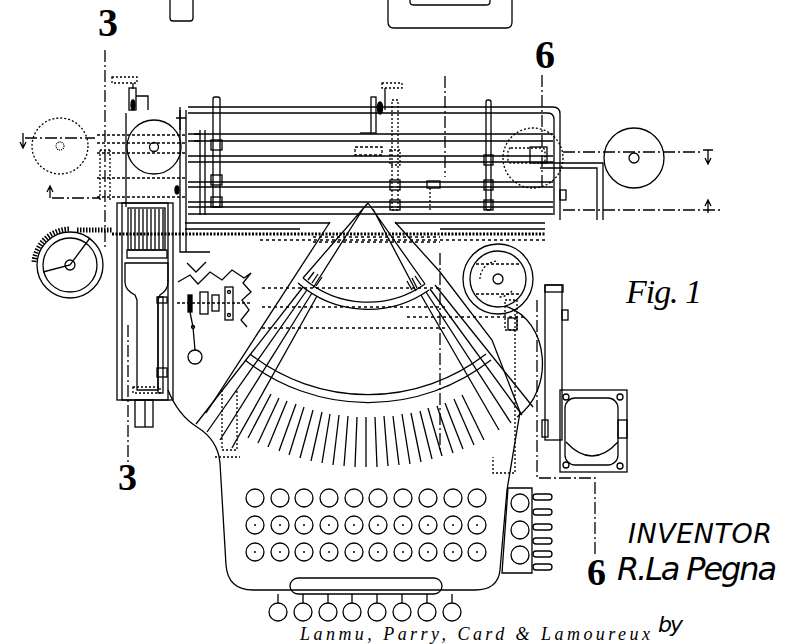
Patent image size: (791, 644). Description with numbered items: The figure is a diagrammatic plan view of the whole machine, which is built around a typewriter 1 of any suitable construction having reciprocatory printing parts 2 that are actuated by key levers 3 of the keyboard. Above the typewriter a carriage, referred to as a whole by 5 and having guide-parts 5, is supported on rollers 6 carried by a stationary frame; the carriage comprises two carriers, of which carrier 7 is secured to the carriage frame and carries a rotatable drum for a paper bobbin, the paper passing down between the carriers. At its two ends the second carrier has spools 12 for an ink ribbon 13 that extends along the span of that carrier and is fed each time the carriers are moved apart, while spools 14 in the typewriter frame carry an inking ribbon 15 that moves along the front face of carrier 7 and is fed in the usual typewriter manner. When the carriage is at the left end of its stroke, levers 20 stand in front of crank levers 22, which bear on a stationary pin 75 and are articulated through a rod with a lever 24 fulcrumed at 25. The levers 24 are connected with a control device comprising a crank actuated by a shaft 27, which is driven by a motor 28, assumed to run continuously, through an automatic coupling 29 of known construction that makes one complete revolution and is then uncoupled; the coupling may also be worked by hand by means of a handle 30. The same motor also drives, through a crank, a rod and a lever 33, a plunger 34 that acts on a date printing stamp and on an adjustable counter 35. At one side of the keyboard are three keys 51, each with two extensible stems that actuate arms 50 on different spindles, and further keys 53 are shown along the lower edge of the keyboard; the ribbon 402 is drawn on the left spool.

The typewriter 1 is at (233, 478).
The reciprocatory printing parts 2 is at (273, 411).
The key levers 3 is at (255, 560).
The carriage guide-parts 5 is at (420, 155).
The rollers 6 is at (527, 152).
The carrier 7 is at (381, 222).
The spools 12 is at (143, 133).
The ink ribbon 13 is at (446, 262).
The spools 14 is at (72, 282).
The inking ribbon 15 is at (370, 129).
The levers 20 is at (125, 112).
The crank levers 22 is at (140, 86).
The lever 24 is at (182, 123).
The fulcrum 25 is at (175, 191).
The shaft 27 is at (520, 313).
The motor 28 is at (603, 453).
The automatic coupling 29 is at (200, 314).
The handle 30 is at (195, 364).
The lever 33 is at (160, 350).
The plunger 34 is at (145, 327).
The adjustable counter 35 is at (140, 222).
The arms 50 is at (541, 513).
The keys 51 is at (521, 562).
The lower keys 53 is at (460, 615).
The stationary pin 75 is at (143, 96).
The ribbon 402 is at (56, 248).